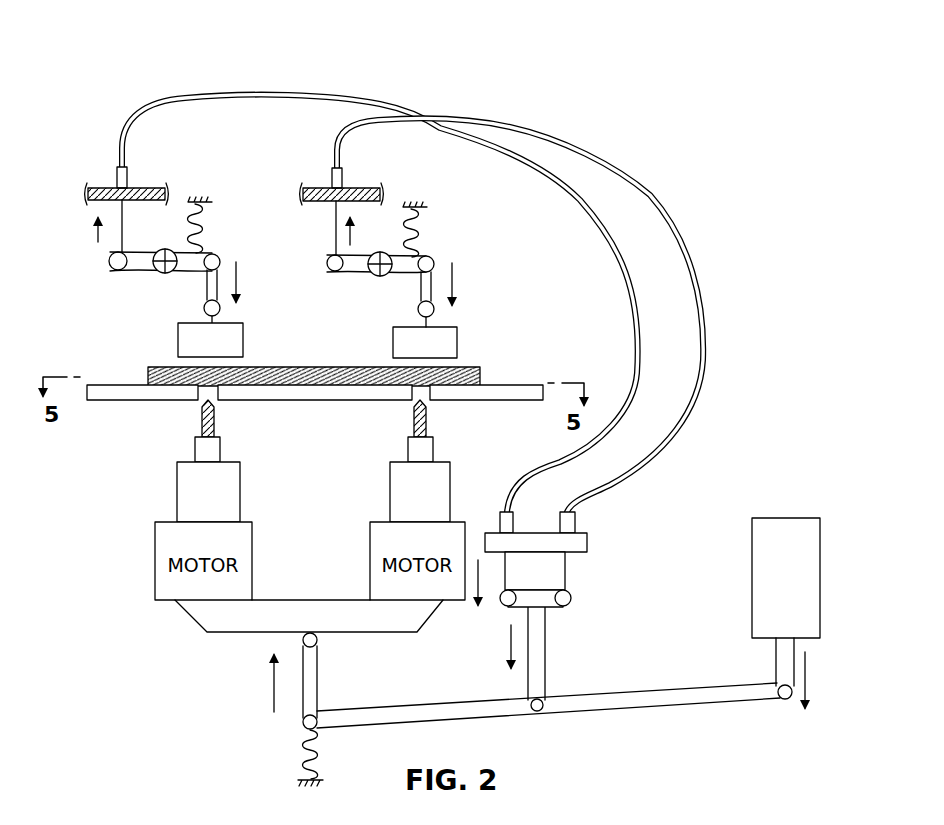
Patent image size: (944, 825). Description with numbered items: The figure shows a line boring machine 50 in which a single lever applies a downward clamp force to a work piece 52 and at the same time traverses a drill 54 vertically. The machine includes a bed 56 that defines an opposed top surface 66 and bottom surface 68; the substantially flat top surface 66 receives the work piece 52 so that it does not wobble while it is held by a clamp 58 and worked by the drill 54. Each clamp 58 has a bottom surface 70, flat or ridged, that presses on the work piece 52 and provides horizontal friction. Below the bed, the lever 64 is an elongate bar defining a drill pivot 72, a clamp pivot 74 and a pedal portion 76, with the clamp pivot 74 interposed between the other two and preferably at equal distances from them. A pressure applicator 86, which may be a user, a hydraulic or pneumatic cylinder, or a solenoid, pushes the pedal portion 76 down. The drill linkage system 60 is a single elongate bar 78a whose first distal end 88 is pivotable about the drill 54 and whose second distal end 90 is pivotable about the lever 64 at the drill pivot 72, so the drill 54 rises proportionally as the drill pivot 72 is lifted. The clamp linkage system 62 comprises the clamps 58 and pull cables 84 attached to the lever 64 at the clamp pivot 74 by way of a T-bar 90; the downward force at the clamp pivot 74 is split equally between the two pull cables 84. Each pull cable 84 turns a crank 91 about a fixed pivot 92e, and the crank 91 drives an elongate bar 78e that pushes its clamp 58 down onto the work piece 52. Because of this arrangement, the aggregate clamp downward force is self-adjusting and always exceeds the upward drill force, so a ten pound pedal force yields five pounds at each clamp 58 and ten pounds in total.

The line boring machine 50 is at (128, 80).
The work piece 52 is at (150, 378).
The drill 54 is at (180, 492).
The bed 56 is at (118, 400).
The clamp 58 is at (197, 330).
The drill linkage system 60 is at (245, 690).
The clamp linkage system 62 is at (740, 228).
The lever 64 is at (660, 702).
The top surface 66 is at (298, 367).
The bottom surface 68 is at (300, 400).
The bottom surface 70 is at (203, 348).
The drill pivot 72 is at (305, 736).
The clamp pivot 74 is at (540, 712).
The pedal portion 76 is at (785, 700).
The elongate bar 78a is at (318, 672).
The elongate bar 78e is at (207, 291).
The pull cable 84 is at (706, 322).
The pressure applicator 86 is at (815, 552).
The first distal end 88 is at (302, 638).
The second distal end 90 is at (304, 722).
The crank 91 is at (157, 270).
The fixed pivot 92e is at (152, 250).